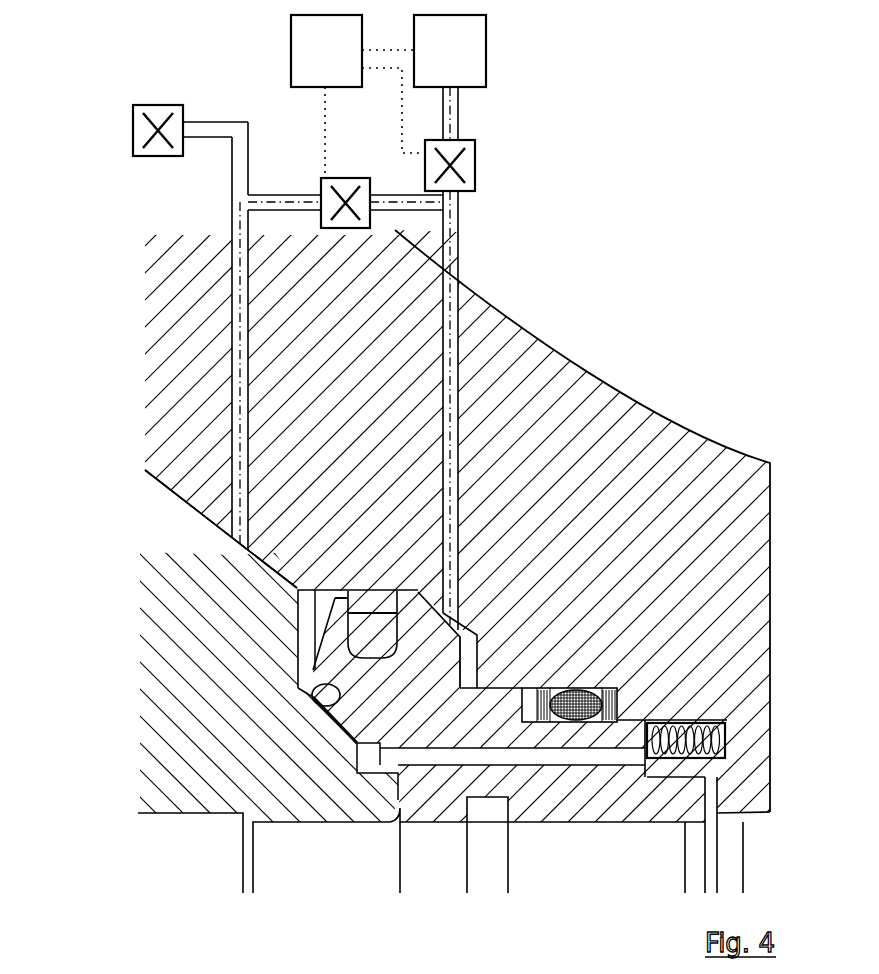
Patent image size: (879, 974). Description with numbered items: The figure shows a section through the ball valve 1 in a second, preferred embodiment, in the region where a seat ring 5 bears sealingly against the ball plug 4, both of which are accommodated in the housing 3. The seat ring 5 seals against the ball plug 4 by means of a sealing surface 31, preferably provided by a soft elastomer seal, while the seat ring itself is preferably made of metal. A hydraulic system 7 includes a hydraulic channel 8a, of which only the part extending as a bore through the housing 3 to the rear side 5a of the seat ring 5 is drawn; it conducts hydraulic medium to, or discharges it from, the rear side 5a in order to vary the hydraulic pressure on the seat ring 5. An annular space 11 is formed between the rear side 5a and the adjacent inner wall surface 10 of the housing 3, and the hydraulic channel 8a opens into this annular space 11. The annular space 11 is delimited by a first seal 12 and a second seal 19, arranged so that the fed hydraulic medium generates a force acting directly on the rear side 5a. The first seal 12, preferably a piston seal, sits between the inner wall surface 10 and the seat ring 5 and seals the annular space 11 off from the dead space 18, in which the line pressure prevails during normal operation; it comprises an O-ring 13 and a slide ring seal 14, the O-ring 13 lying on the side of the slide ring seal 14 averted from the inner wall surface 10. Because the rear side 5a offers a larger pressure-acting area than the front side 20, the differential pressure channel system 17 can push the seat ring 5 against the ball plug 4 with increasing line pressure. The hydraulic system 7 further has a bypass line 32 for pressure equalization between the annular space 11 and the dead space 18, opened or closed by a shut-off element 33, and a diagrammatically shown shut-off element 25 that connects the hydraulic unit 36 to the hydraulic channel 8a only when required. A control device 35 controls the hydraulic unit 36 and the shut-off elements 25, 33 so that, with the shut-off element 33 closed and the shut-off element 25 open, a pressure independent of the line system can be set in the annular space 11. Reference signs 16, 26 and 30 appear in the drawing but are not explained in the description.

The ball valve 1 is at (632, 207).
The housing 3 is at (188, 252).
The ball plug 4 is at (180, 777).
The seat ring 5 is at (453, 817).
The rear side of the seat ring 5a is at (468, 655).
The hydraulic system 7 is at (480, 415).
The hydraulic channel 8a is at (455, 227).
The inner wall surface 10 is at (410, 593).
The annular space 11 is at (462, 614).
The first seal 12 is at (323, 620).
The O-ring 13 is at (298, 687).
The slide ring seal 14 is at (298, 585).
The spring 16 is at (688, 760).
The differential pressure channel system 17 is at (212, 197).
The dead space 18 is at (175, 530).
The second seal 19 is at (573, 726).
The front side of the seat ring 20 is at (327, 638).
The shut-off element 25 is at (475, 150).
The line 26 is at (233, 322).
The valve 30 is at (157, 113).
The sealing surface 31 is at (320, 700).
The bypass line 32 is at (405, 197).
The shut-off element 33 is at (325, 190).
The control device 35 is at (358, 96).
The hydraulic unit 36 is at (450, 51).